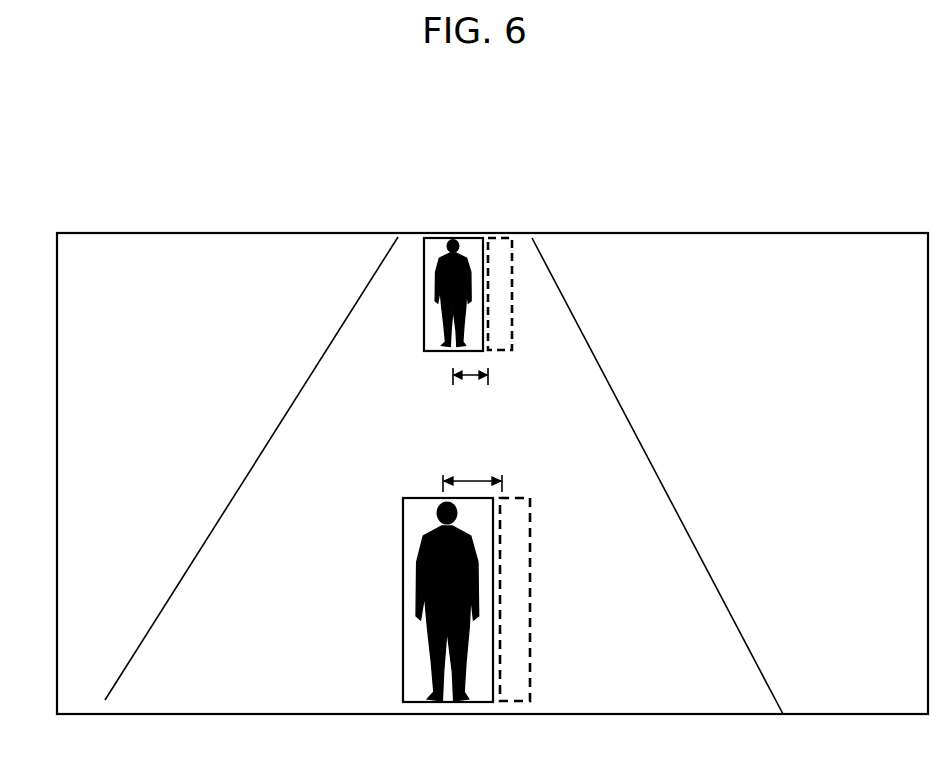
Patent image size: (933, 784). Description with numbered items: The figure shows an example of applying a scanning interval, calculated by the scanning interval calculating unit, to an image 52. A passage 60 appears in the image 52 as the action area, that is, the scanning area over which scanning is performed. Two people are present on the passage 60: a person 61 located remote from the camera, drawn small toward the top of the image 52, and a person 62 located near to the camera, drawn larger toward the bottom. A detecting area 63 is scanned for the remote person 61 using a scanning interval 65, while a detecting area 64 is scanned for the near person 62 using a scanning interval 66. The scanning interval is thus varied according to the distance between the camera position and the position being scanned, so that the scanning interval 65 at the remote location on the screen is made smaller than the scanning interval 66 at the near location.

The image 52 is at (760, 232).
The passage 60 is at (615, 430).
The person 61 is at (435, 292).
The person 62 is at (415, 580).
The detecting area 63 is at (424, 265).
The detecting area 64 is at (403, 630).
The scanning interval 65 is at (475, 382).
The scanning interval 66 is at (465, 478).